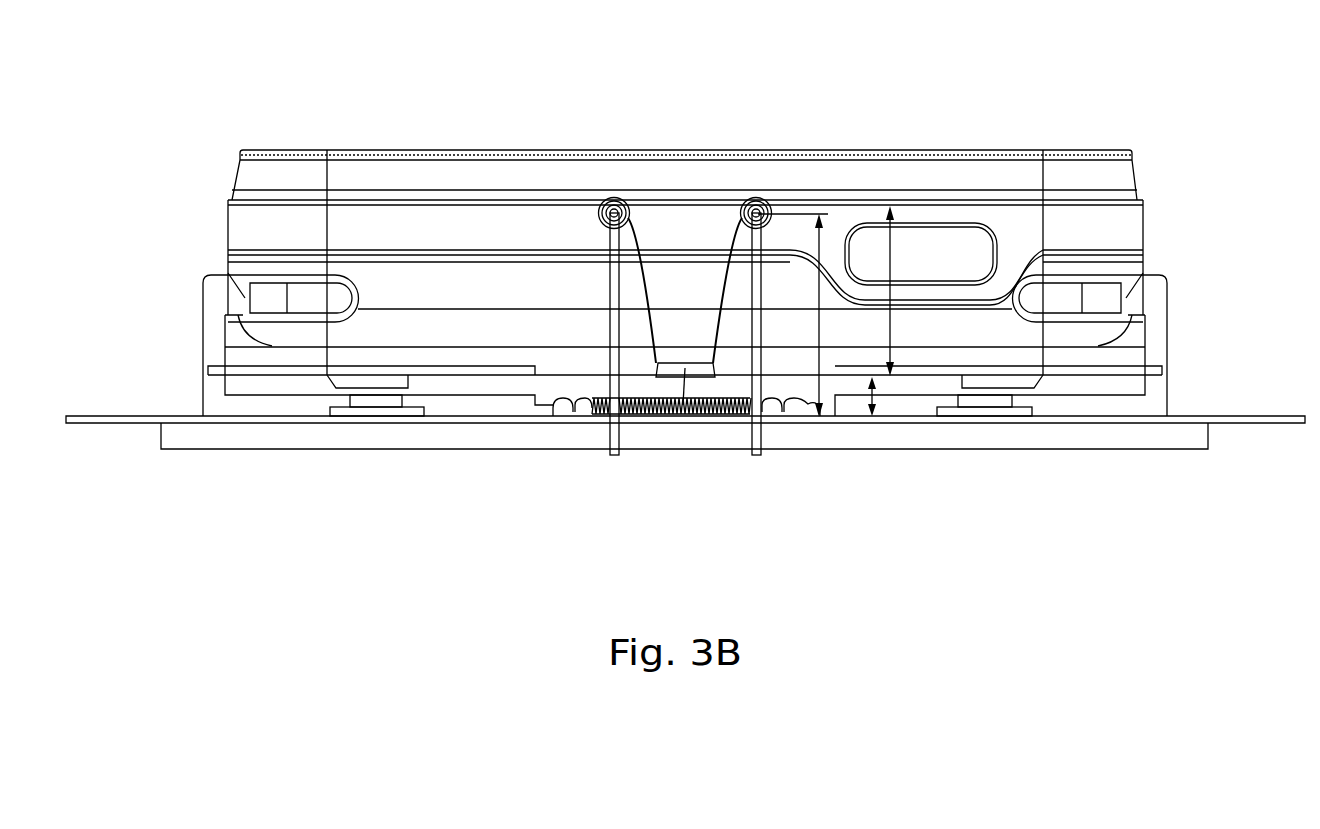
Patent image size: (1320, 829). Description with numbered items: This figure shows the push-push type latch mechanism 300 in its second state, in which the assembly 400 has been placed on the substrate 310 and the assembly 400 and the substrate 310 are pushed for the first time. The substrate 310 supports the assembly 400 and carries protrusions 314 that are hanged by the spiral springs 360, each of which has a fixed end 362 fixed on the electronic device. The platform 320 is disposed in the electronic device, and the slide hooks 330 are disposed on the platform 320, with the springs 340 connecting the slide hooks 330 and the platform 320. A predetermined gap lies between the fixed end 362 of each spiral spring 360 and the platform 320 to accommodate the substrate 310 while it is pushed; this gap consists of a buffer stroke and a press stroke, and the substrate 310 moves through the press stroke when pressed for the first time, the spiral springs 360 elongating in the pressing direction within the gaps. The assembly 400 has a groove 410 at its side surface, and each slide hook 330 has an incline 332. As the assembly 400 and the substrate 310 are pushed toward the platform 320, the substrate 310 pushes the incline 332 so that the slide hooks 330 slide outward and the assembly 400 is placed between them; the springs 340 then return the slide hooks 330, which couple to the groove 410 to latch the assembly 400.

The push-push type latch mechanism 300 is at (258, 88).
The substrate 310 is at (1160, 370).
The protrusion 314 is at (700, 418).
The platform 320 is at (1155, 440).
The slide hook 330 is at (1155, 328).
The incline 332 is at (1125, 299).
The spring 340 is at (657, 420).
The spiral spring 360 is at (645, 237).
The fixed end 362 is at (758, 198).
The assembly 400 is at (950, 172).
The groove 410 is at (1083, 291).